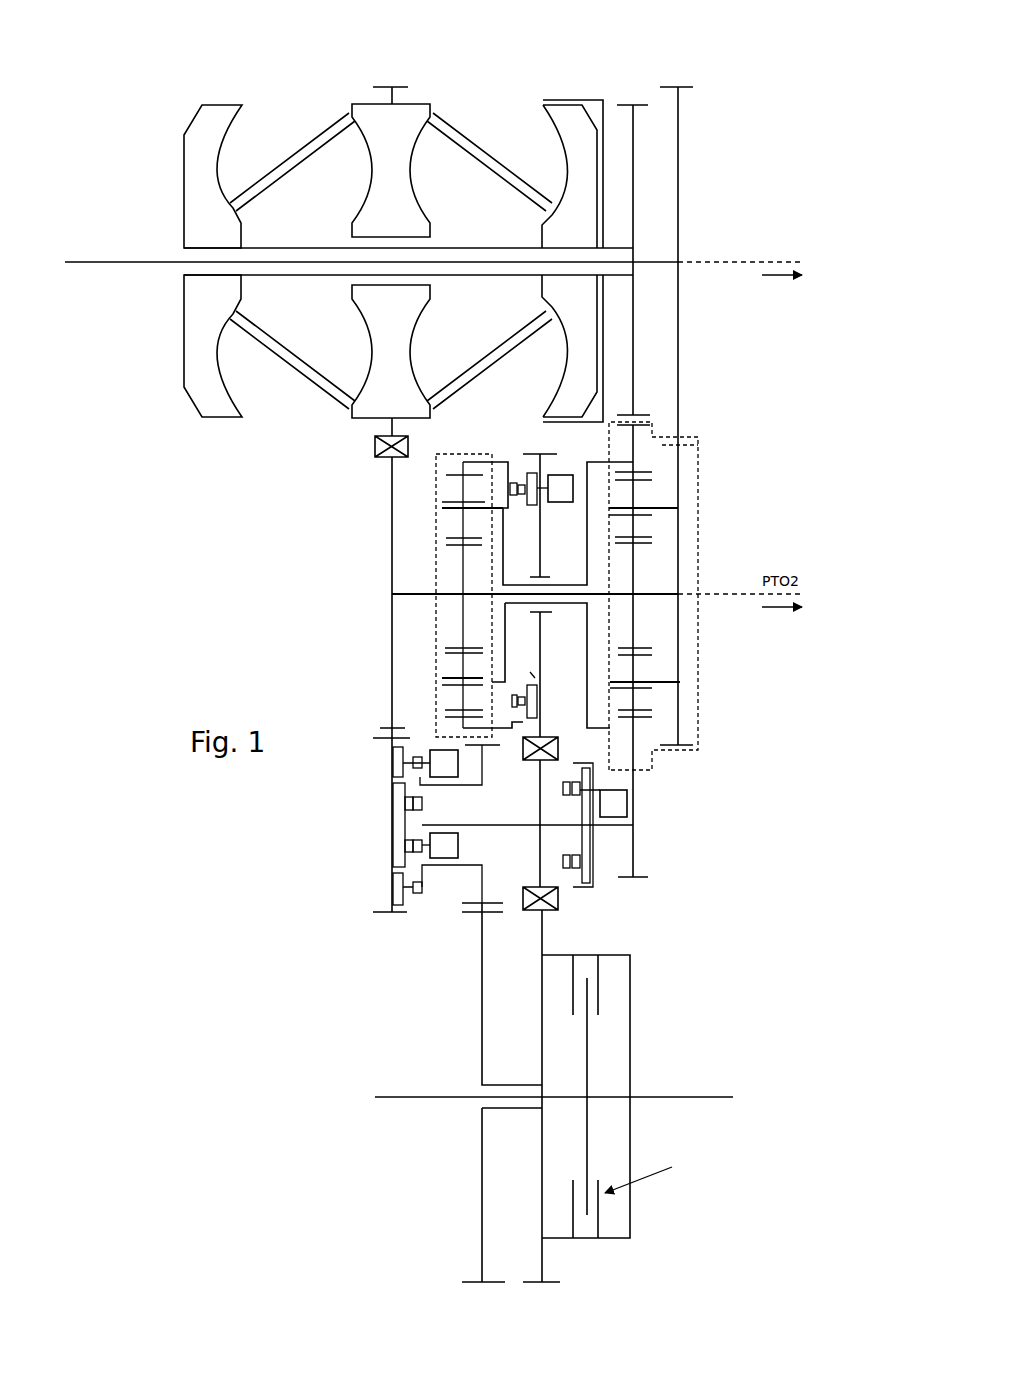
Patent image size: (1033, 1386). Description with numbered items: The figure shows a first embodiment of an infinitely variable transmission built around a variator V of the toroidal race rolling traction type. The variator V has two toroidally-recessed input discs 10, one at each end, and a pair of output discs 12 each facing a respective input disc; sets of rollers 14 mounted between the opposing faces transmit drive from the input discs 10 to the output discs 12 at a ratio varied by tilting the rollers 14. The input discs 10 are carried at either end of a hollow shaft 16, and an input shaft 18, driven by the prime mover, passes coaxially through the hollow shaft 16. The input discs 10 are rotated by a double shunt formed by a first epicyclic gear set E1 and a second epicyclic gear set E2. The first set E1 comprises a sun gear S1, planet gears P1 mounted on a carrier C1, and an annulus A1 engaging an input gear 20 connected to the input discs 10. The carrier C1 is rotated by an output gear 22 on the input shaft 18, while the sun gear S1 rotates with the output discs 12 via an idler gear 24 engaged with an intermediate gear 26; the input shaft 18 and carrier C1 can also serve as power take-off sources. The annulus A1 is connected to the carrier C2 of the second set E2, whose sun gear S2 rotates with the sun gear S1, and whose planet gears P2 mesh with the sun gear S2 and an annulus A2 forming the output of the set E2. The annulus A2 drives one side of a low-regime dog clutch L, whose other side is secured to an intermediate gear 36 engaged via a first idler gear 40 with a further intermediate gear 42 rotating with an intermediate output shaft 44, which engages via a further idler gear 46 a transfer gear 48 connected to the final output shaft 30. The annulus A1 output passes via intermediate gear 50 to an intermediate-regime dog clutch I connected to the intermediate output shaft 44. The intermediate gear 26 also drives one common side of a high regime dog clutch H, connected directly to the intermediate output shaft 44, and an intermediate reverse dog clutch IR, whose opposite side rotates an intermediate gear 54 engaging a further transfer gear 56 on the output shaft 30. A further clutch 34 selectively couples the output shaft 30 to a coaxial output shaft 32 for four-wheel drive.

The variator V is at (343, 229).
The input discs 10 is at (222, 113).
The output discs 12 is at (367, 113).
The rollers 14 is at (313, 143).
The hollow shaft 16 is at (305, 245).
The input shaft 18 is at (107, 257).
The input gear 20 is at (623, 105).
The output gear 22 is at (679, 142).
The idler gear 24 is at (375, 447).
The intermediate gear 26 is at (392, 620).
The final output shaft 30 is at (685, 1095).
The coaxial output shaft 32 is at (418, 1095).
The further clutch 34 is at (603, 983).
The intermediate gear 36 is at (550, 583).
The first idler gear 40 is at (560, 747).
The further intermediate gear 42 is at (540, 780).
The intermediate output shaft 44 is at (503, 827).
The further idler gear 46 is at (560, 897).
The transfer gear 48 is at (547, 915).
The intermediate gear 50 is at (643, 877).
The intermediate gear 54 is at (480, 903).
The further transfer gear 56 is at (472, 913).
The annulus A1 is at (635, 437).
The annulus A2 is at (485, 463).
The carrier C1 is at (678, 523).
The carrier C2 is at (485, 507).
The first epicyclic gear set E1 is at (700, 475).
The second epicyclic gear set E2 is at (435, 538).
The planet gears P1 is at (635, 490).
The planet gears P2 is at (463, 490).
The sun gear S1 is at (666, 651).
The sun gear S2 is at (463, 570).
The low-regime dog clutch L is at (541, 489).
The high regime dog clutch H is at (425, 825).
The intermediate reverse dog clutch IR is at (446, 765).
The intermediate-regime dog clutch I is at (595, 825).